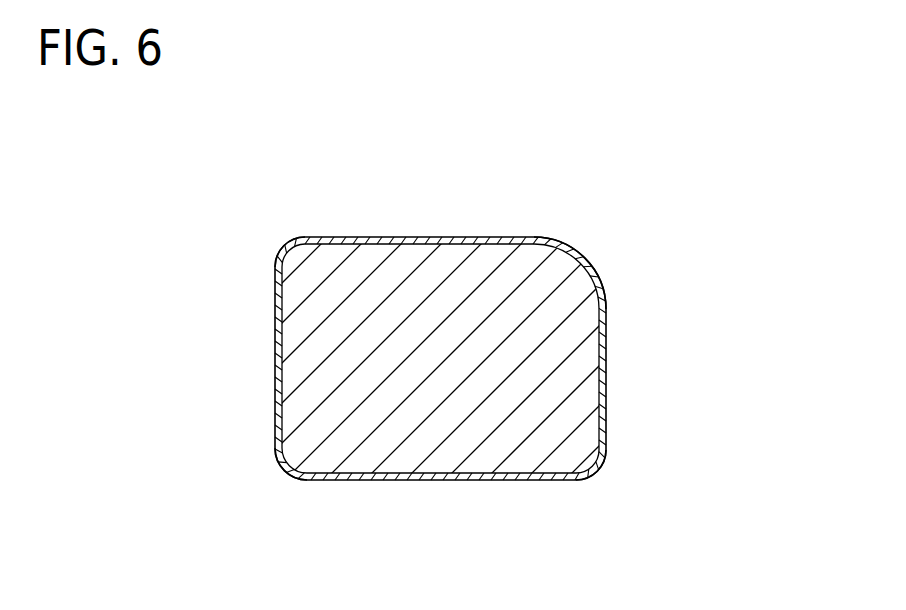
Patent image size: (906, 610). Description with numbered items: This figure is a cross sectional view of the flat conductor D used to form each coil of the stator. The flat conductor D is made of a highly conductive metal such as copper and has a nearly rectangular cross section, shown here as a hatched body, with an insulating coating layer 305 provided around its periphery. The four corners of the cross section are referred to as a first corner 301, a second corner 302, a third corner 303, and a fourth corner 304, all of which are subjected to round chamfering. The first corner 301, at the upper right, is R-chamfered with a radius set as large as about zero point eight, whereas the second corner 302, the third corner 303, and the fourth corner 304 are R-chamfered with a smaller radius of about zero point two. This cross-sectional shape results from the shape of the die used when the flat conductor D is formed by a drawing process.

The first corner 301 is at (593, 272).
The second corner 302 is at (270, 485).
The third corner 303 is at (612, 488).
The fourth corner 304 is at (267, 227).
The insulating coating layer 305 is at (605, 378).
The flat conductor D is at (435, 467).